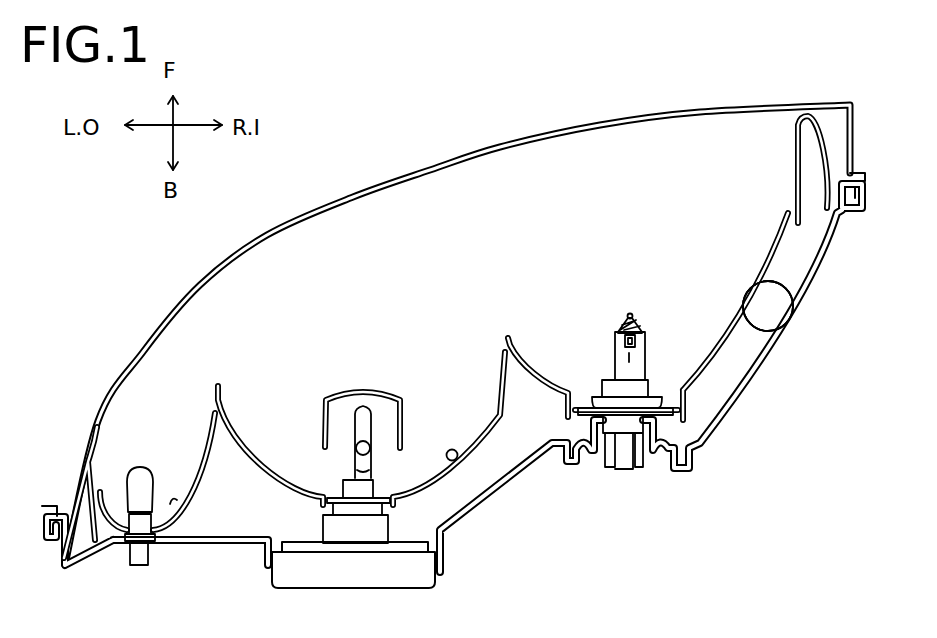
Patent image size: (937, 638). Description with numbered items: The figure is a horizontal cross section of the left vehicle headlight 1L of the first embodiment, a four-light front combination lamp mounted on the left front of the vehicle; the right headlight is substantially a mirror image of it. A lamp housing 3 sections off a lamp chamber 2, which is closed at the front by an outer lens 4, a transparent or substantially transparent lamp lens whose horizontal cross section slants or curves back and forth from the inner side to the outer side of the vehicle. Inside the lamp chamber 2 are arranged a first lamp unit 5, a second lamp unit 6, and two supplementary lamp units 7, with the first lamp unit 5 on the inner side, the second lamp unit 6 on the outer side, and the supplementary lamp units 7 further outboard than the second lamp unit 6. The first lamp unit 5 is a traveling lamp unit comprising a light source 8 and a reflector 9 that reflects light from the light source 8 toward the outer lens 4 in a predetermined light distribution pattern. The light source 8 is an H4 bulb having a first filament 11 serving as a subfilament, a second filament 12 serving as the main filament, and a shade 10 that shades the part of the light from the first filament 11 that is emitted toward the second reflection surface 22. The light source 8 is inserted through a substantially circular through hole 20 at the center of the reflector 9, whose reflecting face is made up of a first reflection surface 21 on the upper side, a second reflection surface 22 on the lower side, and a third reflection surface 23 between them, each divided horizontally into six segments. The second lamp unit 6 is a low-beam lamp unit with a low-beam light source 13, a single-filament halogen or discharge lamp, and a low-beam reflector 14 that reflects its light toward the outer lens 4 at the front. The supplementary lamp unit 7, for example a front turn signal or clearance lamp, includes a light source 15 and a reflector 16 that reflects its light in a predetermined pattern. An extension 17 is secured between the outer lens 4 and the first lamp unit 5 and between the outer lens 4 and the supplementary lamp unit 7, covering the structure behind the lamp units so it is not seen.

The vehicle headlight 1L is at (467, 349).
The lamp chamber 2 is at (430, 306).
The lamp housing 3 is at (234, 543).
The outer lens 4 is at (357, 195).
The first lamp unit 5 is at (700, 322).
The second lamp unit 6 is at (366, 442).
The supplementary lamp unit 7 is at (157, 496).
The light source 8 is at (634, 358).
The reflector 9 is at (730, 357).
The shade 10 is at (617, 332).
The first filament 11 is at (641, 329).
The second filament 12 is at (632, 356).
The low-beam light source 13 is at (372, 462).
The low-beam reflector 14 is at (453, 462).
The light source 15 is at (149, 476).
The reflector 16 is at (181, 506).
The extension 17 is at (96, 418).
The through hole 20 is at (590, 383).
The first reflection surface 21 is at (818, 330).
The second reflection surface 22 is at (768, 306).
The third reflection surface 23 is at (797, 307).